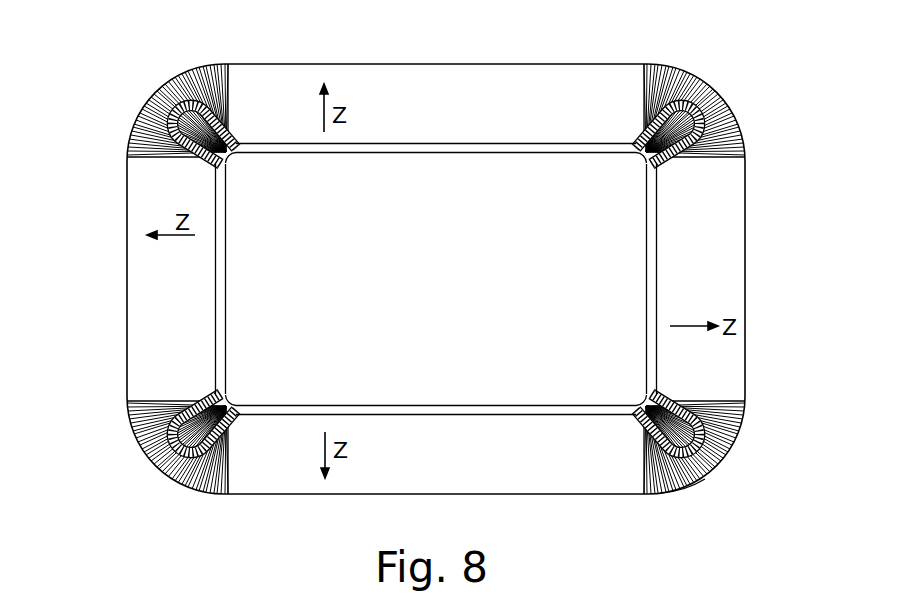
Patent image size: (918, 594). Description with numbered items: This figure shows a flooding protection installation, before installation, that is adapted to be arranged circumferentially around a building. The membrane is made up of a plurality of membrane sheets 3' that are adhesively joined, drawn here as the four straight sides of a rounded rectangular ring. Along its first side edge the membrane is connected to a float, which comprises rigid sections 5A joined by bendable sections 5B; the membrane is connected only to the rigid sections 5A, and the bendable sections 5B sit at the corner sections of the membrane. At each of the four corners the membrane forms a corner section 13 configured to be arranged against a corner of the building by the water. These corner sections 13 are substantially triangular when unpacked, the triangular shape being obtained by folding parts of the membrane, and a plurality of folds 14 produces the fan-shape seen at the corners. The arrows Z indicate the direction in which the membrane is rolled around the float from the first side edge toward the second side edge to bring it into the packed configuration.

The membrane sheet 3' is at (442, 281).
The rigid section 5A is at (418, 150).
The bendable section 5B is at (235, 156).
The corner section 13 is at (160, 108).
The fold 14 is at (697, 473).